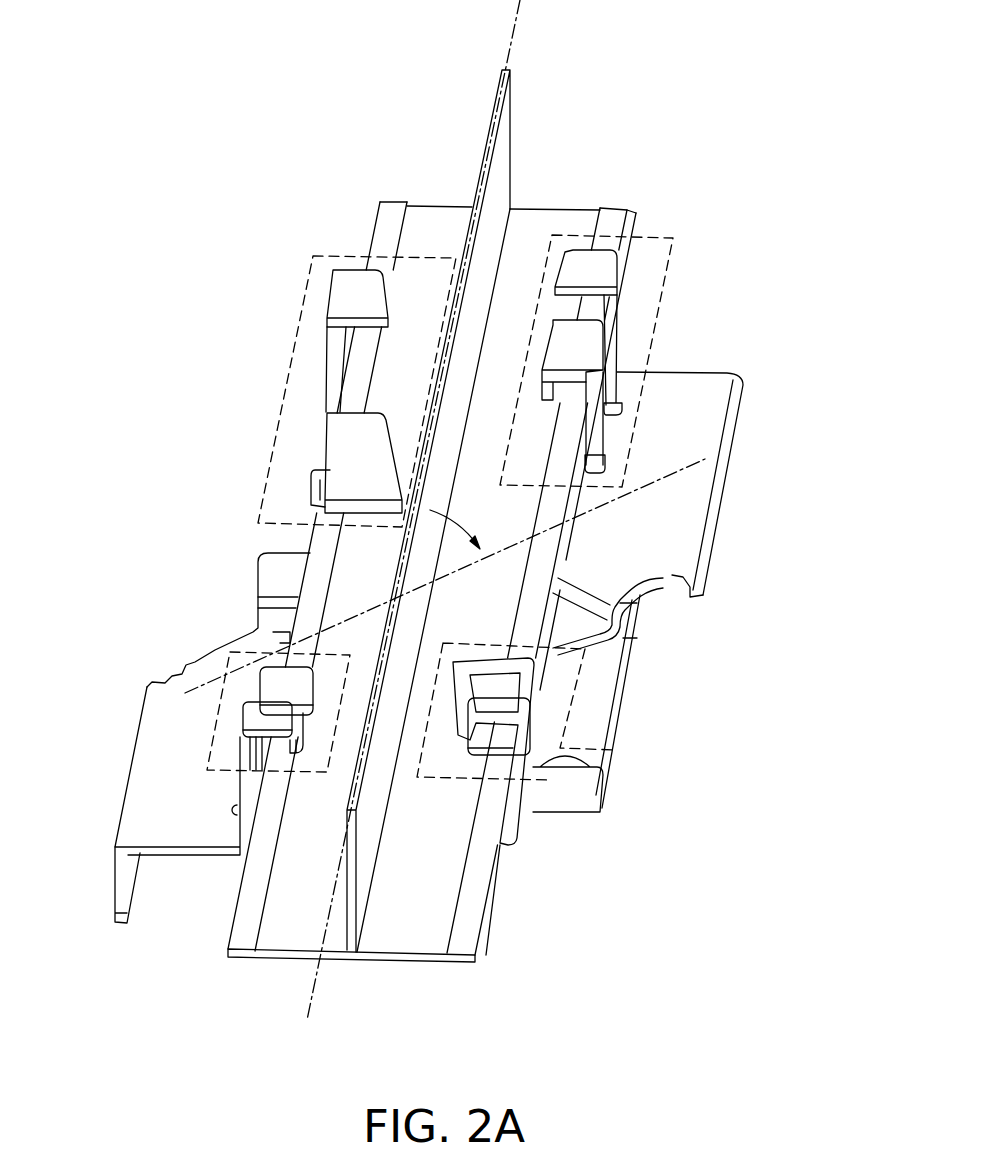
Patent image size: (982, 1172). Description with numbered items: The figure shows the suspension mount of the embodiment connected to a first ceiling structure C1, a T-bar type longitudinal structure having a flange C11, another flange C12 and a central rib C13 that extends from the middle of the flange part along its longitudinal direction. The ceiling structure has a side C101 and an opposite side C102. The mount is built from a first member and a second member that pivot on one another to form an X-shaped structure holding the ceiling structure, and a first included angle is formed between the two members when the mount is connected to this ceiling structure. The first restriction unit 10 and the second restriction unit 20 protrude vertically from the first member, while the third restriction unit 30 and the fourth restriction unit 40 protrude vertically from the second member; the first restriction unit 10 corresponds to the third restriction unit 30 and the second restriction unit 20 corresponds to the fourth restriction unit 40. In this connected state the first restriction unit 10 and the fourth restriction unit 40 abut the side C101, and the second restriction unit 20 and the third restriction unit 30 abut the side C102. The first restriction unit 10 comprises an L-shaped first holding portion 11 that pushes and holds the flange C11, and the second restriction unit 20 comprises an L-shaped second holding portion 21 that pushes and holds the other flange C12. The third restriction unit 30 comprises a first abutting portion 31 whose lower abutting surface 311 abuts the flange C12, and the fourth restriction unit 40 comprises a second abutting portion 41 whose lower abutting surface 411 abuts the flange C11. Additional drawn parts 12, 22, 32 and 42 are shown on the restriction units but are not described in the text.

The first ceiling structure C1 is at (394, 200).
The flange C11 is at (423, 932).
The flange C12 is at (290, 930).
The central rib C13 is at (497, 173).
The side C101 is at (474, 957).
The side C102 is at (230, 951).
The first restriction unit 10 is at (607, 752).
The first holding portion 11 is at (513, 670).
The second clip 12 is at (500, 698).
The second restriction unit 20 is at (283, 383).
The second holding portion 21 is at (355, 447).
The second hook 22 is at (350, 297).
The third restriction unit 30 is at (223, 660).
The first abutting portion 31 is at (268, 688).
The second clamp 32 is at (268, 718).
The lower abutting surface 311 is at (285, 750).
The fourth restriction unit 40 is at (668, 265).
The second abutting portion 41 is at (568, 345).
The second latch 42 is at (583, 270).
The lower abutting surface 411 is at (585, 433).